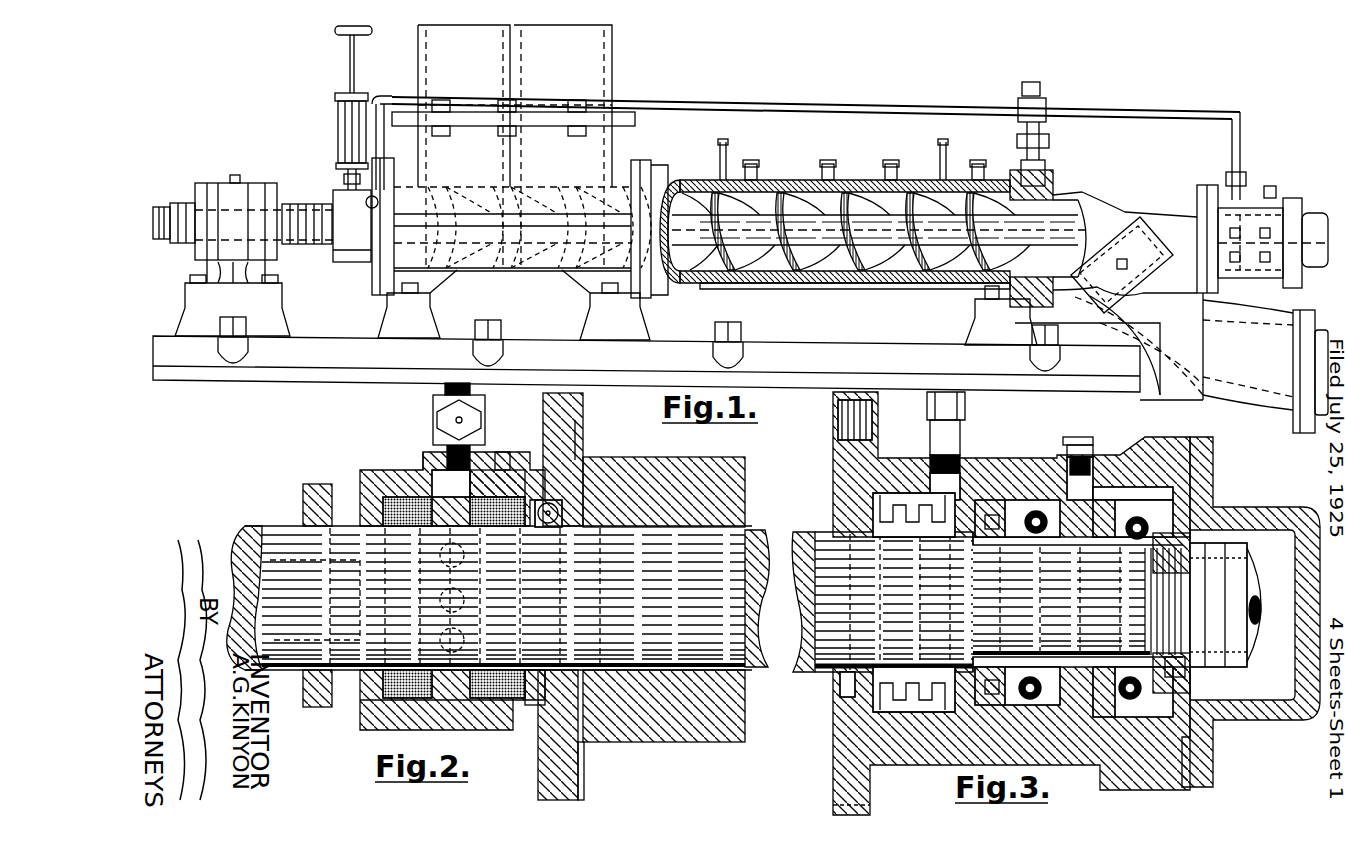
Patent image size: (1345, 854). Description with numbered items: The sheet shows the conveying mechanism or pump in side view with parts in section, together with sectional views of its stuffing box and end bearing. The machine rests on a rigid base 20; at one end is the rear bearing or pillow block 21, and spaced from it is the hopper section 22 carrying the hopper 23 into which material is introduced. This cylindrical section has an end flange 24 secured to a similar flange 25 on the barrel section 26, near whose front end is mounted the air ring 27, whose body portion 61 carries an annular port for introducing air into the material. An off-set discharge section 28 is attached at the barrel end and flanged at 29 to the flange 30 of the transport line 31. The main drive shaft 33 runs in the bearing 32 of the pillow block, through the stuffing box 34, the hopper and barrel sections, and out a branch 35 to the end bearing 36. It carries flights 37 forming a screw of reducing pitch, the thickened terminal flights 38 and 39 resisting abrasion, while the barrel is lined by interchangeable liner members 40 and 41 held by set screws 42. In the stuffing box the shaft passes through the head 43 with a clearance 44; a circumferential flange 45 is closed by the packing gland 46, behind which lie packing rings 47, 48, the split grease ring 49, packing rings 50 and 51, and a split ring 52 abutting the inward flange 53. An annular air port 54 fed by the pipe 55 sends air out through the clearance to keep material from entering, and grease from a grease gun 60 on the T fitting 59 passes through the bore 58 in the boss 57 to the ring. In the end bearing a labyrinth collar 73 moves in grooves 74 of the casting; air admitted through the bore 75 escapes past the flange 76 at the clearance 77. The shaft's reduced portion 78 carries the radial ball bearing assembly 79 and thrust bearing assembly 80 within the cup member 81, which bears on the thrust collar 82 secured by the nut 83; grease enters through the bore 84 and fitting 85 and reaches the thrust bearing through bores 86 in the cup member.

In FIG. 1, the base 20 is at (872, 346).
In FIG. 1, the rear bearing or pillow block 21 is at (312, 280).
In FIG. 1, the hopper section 22 is at (628, 128).
In FIG. 1, the hopper 23 is at (606, 64).
In FIG. 1, the end flange 24 is at (638, 168).
In FIG. 1, the flange 25 is at (655, 177).
In FIG. 1, the barrel section 26 is at (796, 176).
In FIG. 1, the air ring 27 is at (1018, 168).
In FIG. 1, the off-set discharge section 28 is at (1077, 208).
In FIG. 1, the flange 29 is at (1290, 326).
In FIG. 1, the flange 30 is at (1300, 430).
In FIG. 1, the transport line 31 is at (1322, 418).
In FIG. 1, the bearing 32 is at (216, 182).
In FIG. 1, the main drive shaft 33 is at (326, 198).
In FIG. 2, the main drive shaft 33 is at (285, 522).
In FIG. 3, the main drive shaft 33 is at (987, 588).
In FIG. 1, the stuffing box 34 is at (360, 258).
In FIG. 2, the stuffing box 34 is at (513, 591).
In FIG. 1, the branch 35 is at (1145, 212).
In FIG. 1, the end bearing 36 is at (1292, 195).
In FIG. 3, the end bearing 36 is at (1054, 603).
In FIG. 1, the flights 37 is at (748, 283).
In FIG. 1, the terminal flight 38 is at (893, 283).
In FIG. 1, the terminal flight 39 is at (950, 289).
In FIG. 1, the liner member 40 is at (790, 278).
In FIG. 1, the liner member 41 is at (890, 192).
In FIG. 1, the set screws 42 is at (830, 175).
In FIG. 2, the head 43 is at (650, 480).
In FIG. 2, the clearance 44 is at (778, 523).
In FIG. 2, the circumferential flange 45 is at (360, 720).
In FIG. 2, the packing gland 46 is at (324, 478).
In FIG. 2, the packing ring 47 is at (380, 468).
In FIG. 2, the packing ring 48 is at (408, 458).
In FIG. 2, the split grease ring 49 is at (508, 452).
In FIG. 2, the packing ring 50 is at (518, 470).
In FIG. 2, the packing ring 51 is at (526, 482).
In FIG. 2, the split ring 52 is at (527, 700).
In FIG. 2, the flange 53 is at (540, 760).
In FIG. 2, the annular air port 54 is at (580, 760).
In FIG. 1, the pipe 55 is at (380, 148).
In FIG. 2, the pipe 55 is at (583, 405).
In FIG. 2, the boss 57 is at (440, 458).
In FIG. 2, the bore 58 is at (440, 408).
In FIG. 2, the T fitting 59 is at (478, 400).
In FIG. 1, the grease gun 60 is at (338, 119).
In FIG. 1, the body portion 61 is at (1044, 163).
In FIG. 3, the labyrinth collar 73 is at (850, 555).
In FIG. 3, the grooves 74 is at (905, 492).
In FIG. 3, the bore 75 is at (958, 470).
In FIG. 3, the flange 76 is at (860, 484).
In FIG. 3, the clearance 77 is at (836, 688).
In FIG. 3, the reduced diameter portion 78 is at (1075, 715).
In FIG. 3, the radial ball bearing assembly 79 is at (1010, 735).
In FIG. 3, the thrust bearing assembly 80 is at (1150, 785).
In FIG. 3, the cup member 81 is at (1122, 740).
In FIG. 3, the thrust collar 82 is at (1225, 690).
In FIG. 3, the nut 83 is at (1240, 556).
In FIG. 3, the bore 84 is at (1095, 478).
In FIG. 3, the fitting 85 is at (1068, 432).
In FIG. 3, the bores 86 is at (1152, 492).